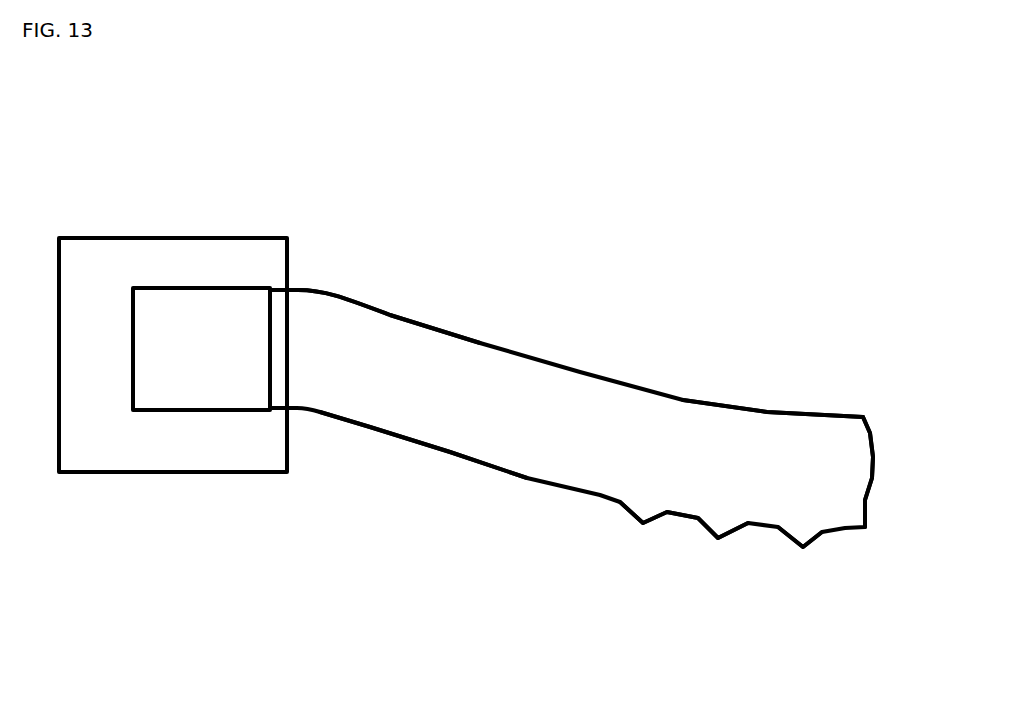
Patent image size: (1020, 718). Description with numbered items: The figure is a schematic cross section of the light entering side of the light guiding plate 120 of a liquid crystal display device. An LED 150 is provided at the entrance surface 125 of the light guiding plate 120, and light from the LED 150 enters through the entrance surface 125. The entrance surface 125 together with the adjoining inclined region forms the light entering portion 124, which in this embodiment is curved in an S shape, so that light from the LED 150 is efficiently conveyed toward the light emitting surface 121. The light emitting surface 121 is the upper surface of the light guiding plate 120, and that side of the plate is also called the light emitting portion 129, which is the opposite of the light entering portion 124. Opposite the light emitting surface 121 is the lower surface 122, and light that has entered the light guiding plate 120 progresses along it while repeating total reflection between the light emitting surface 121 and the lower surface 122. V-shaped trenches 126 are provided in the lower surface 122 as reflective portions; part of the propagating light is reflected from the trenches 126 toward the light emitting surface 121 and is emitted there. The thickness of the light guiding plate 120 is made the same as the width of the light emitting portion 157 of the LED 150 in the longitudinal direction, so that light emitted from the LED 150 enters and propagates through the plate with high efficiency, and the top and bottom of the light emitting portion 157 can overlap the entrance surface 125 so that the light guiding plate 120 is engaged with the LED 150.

The light guiding plate 120 is at (548, 435).
The light emitting surface 121 is at (743, 405).
The lower surface 122 is at (685, 517).
The light entering portion 124 is at (367, 400).
The entrance surface 125 is at (275, 354).
The trenches 126 is at (807, 547).
The light emitting portion 129 is at (813, 432).
The LED 150 is at (185, 263).
The light emitting portion of the LED 157 is at (197, 392).